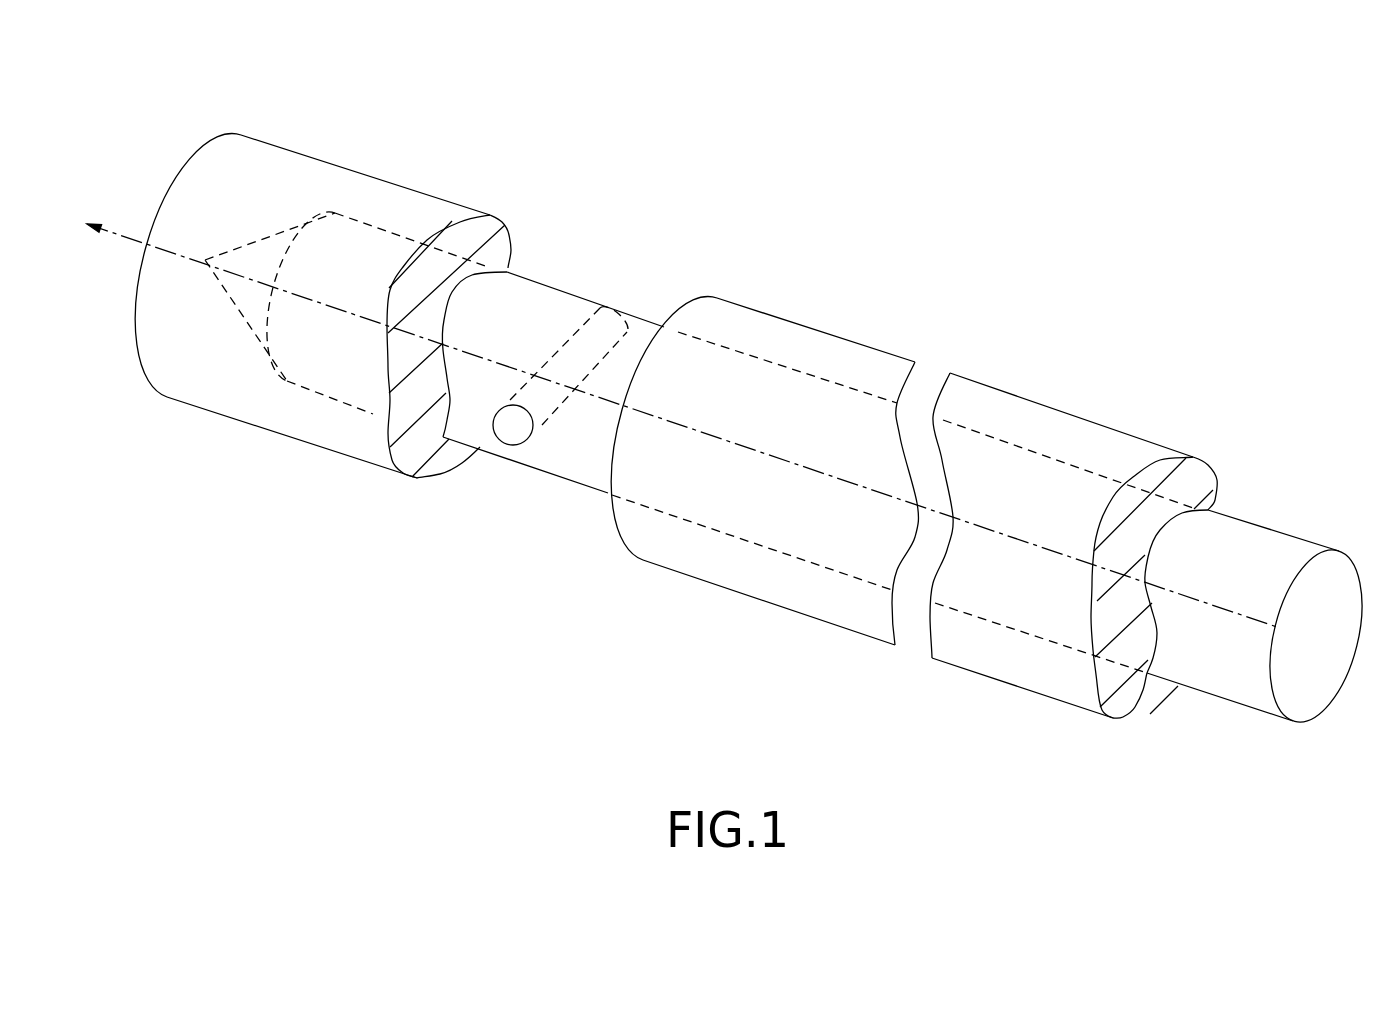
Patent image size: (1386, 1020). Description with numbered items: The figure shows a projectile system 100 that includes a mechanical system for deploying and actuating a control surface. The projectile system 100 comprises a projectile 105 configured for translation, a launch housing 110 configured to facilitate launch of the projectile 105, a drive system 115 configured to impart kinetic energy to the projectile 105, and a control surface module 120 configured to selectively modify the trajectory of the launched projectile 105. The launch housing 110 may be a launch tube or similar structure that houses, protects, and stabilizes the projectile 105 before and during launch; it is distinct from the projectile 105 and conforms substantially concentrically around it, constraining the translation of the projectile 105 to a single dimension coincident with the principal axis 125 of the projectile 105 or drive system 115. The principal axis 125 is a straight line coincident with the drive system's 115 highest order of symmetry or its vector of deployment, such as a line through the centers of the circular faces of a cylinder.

The projectile system 100 is at (665, 670).
The projectile 105 is at (368, 245).
The launch housing 110 is at (463, 208).
The drive system 115 is at (1347, 557).
The control surface module 120 is at (605, 325).
The principal axis 125 is at (110, 228).